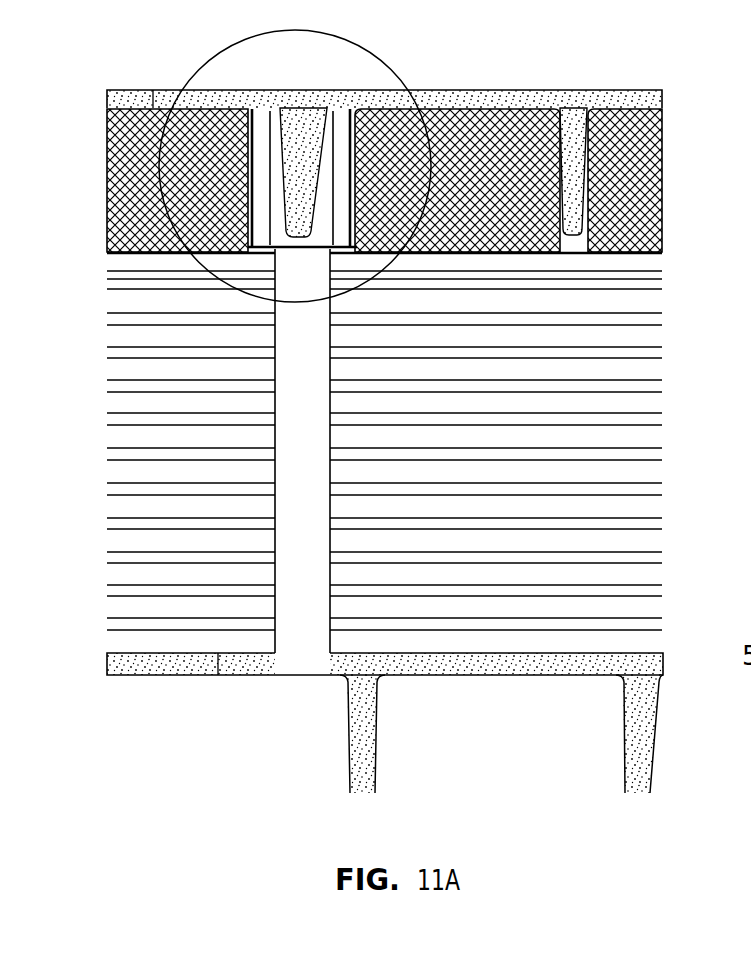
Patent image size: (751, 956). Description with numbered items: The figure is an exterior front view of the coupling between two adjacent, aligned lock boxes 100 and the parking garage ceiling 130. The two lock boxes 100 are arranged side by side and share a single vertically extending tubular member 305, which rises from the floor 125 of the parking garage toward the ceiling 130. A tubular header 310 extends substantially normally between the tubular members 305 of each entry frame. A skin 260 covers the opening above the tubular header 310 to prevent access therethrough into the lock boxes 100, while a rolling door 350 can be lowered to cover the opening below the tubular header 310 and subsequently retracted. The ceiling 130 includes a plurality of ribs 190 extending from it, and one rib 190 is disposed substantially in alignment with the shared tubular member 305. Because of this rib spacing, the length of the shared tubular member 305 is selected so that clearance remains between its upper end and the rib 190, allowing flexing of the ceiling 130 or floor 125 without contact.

The lock box 100 is at (327, 682).
The floor 125 is at (497, 672).
The ceiling 130 is at (573, 90).
The rib 190 is at (306, 184).
The skin 260 is at (108, 205).
The tubular member 305 is at (322, 510).
The tubular header 310 is at (107, 270).
The rolling door 350 is at (130, 455).